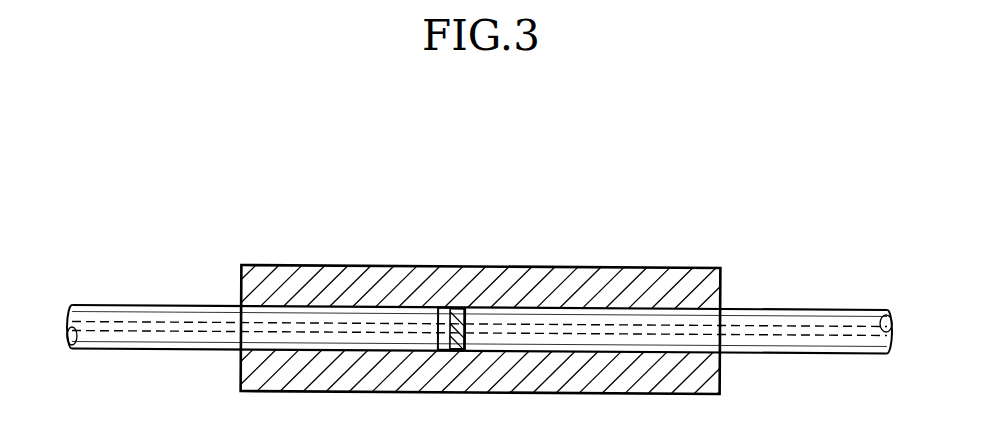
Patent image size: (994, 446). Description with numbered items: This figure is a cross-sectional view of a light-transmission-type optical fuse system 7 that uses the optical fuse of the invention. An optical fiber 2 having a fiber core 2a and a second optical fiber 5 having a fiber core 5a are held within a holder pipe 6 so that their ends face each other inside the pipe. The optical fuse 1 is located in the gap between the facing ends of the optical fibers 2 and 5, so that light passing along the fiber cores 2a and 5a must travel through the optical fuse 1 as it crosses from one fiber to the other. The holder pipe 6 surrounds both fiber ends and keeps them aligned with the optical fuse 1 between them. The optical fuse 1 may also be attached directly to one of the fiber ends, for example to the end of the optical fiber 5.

The optical fuse 1 is at (450, 308).
The optical fiber 2 is at (678, 336).
The fiber core 2a is at (776, 338).
The optical fiber 5 is at (265, 327).
The fiber core 5a is at (164, 335).
The holder pipe 6 is at (612, 290).
The reinforced splice portion 7 is at (481, 260).